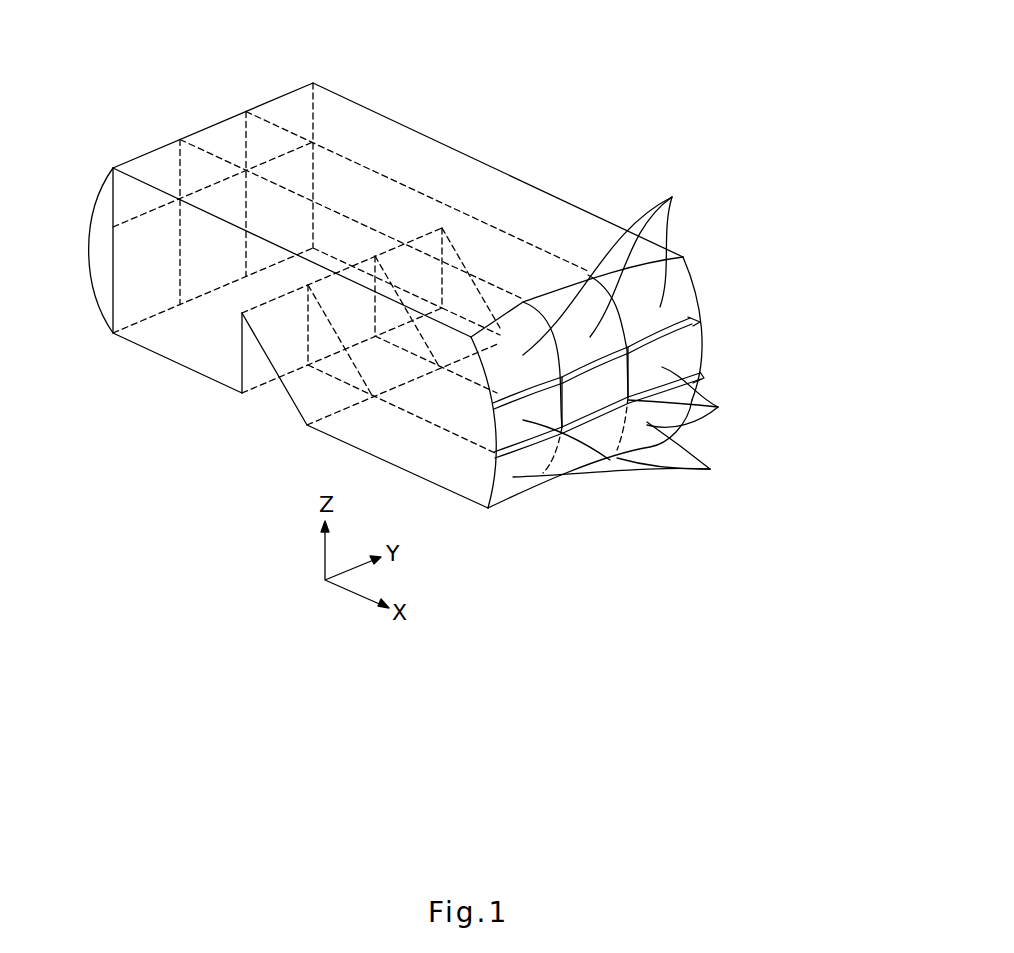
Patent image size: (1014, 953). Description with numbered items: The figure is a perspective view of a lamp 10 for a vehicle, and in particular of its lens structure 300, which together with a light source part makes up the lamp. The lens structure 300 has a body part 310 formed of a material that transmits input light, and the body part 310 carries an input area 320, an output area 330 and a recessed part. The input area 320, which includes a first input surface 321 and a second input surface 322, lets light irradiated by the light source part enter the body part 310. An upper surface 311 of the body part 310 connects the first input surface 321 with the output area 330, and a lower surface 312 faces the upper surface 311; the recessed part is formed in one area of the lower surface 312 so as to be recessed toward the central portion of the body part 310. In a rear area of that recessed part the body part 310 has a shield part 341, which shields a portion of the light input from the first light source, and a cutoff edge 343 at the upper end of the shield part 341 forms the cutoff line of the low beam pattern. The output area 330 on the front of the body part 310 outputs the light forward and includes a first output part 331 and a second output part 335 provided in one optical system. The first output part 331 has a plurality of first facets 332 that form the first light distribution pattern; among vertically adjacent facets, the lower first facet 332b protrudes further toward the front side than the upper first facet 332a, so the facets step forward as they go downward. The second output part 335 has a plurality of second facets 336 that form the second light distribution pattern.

The lamp for a vehicle 10 is at (126, 26).
The lens structure 300 is at (483, 71).
The body part 310 is at (446, 136).
The upper surface 311 is at (353, 135).
The lower surface 312 is at (160, 371).
The input area 320 is at (35, 217).
The first input surface 321 is at (91, 233).
The second input surface 322 is at (290, 398).
The output area 330 is at (853, 193).
The first output part 331 is at (826, 438).
The first facets 332 is at (785, 422).
The first facet on an upper side 332a is at (722, 411).
The first facet on a lower side 332b is at (711, 470).
The second output part 335 is at (716, 186).
The second facets 336 is at (617, 265).
The shield part 341 is at (252, 368).
The cutoff edge 343 is at (242, 313).